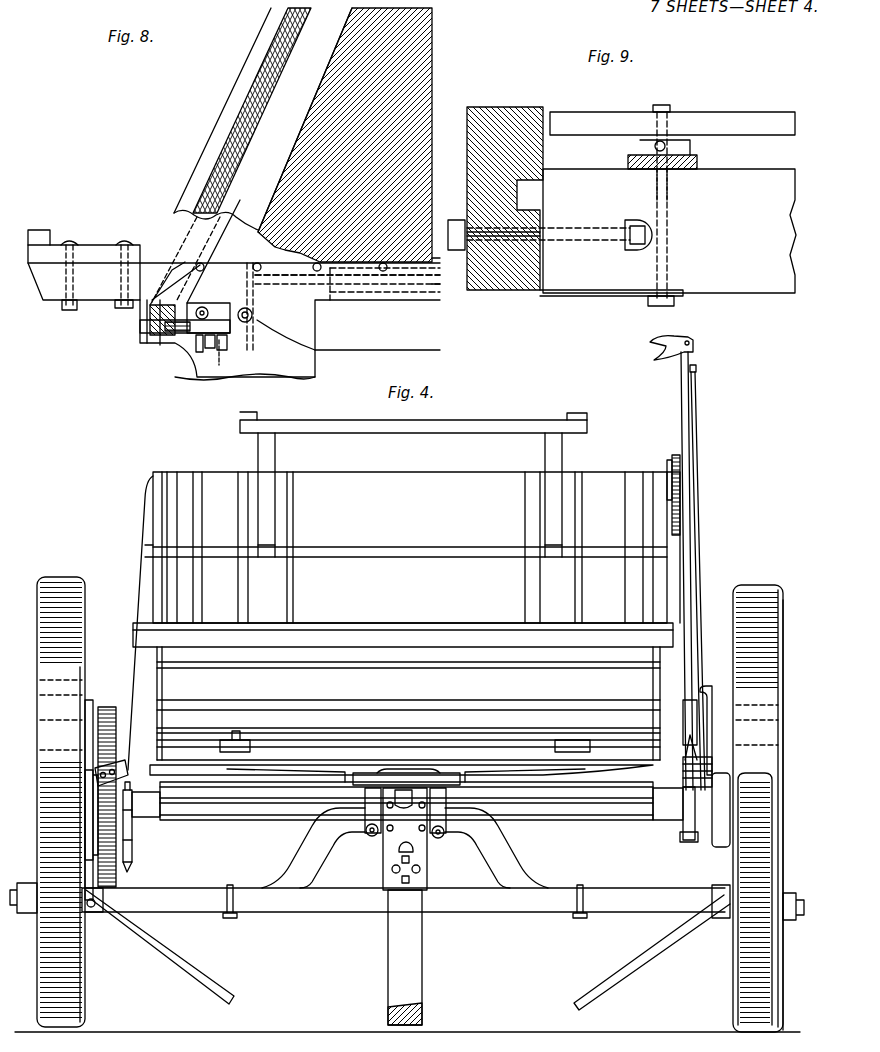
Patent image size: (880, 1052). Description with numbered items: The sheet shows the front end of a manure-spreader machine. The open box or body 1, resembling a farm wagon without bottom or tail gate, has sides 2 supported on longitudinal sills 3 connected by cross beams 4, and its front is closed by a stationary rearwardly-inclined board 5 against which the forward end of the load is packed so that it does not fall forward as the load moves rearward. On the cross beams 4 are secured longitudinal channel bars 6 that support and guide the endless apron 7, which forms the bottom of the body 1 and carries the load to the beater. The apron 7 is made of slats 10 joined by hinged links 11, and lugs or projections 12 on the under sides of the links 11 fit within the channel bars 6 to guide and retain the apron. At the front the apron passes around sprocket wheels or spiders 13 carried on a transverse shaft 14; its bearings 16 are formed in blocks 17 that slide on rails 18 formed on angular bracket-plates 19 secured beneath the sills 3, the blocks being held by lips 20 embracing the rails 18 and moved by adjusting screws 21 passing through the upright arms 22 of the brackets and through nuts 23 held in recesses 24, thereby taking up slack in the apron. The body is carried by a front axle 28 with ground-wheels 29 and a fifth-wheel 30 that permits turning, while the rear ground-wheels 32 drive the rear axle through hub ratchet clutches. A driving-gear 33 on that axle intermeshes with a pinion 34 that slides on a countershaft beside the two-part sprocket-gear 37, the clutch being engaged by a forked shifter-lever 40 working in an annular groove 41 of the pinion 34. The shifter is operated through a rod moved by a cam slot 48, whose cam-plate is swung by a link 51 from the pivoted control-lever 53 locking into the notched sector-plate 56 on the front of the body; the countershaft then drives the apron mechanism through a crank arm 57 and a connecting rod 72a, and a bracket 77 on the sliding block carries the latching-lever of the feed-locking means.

In FIG. 4, the open box or body 1 is at (410, 533).
In FIG. 8, the sides 2 is at (263, 120).
In FIG. 4, the sides 2 is at (146, 487).
In FIG. 8, the longitudinal sill 3 is at (365, 345).
In FIG. 9, the longitudinal sill 3 is at (504, 292).
In FIG. 9, the cross beam 4 is at (772, 283).
In FIG. 4, the cross beam 4 is at (200, 790).
In FIG. 8, the rearwardly-inclined board 5 is at (227, 146).
In FIG. 4, the rearwardly-inclined board 5 is at (425, 485).
In FIG. 8, the longitudinal channel bar 6 is at (353, 280).
In FIG. 9, the longitudinal channel bar 6 is at (690, 147).
In FIG. 4, the endless apron 7 is at (445, 628).
In FIG. 8, the slat 10 is at (445, 257).
In FIG. 9, the slat 10 is at (766, 118).
In FIG. 4, the slat 10 is at (375, 662).
In FIG. 8, the hinged link 11 is at (445, 289).
In FIG. 9, the hinged link 11 is at (670, 128).
In FIG. 8, the lug or projection 12 is at (370, 276).
In FIG. 9, the lug or projection 12 is at (672, 175).
In FIG. 8, the sprocket wheel or spider 13 is at (221, 244).
In FIG. 8, the forward transverse shaft 14 is at (215, 295).
In FIG. 8, the bearing 16 is at (210, 310).
In FIG. 8, the block 17 is at (207, 348).
In FIG. 8, the rail 18 is at (162, 340).
In FIG. 8, the angular bracket-plate 19 is at (225, 350).
In FIG. 8, the lip 20 is at (200, 330).
In FIG. 8, the adjusting screw 21 is at (128, 322).
In FIG. 8, the upright arm 22 is at (151, 300).
In FIG. 8, the nut 23 is at (219, 365).
In FIG. 8, the recess 24 is at (199, 352).
In FIG. 4, the front axle 28 is at (612, 905).
In FIG. 4, the ground-wheel 29 is at (776, 862).
In FIG. 4, the fifth-wheel 30 is at (435, 838).
In FIG. 4, the ground-wheel 32 is at (60, 580).
In FIG. 4, the driving-gear 33 is at (101, 705).
In FIG. 4, the pinion 34 is at (92, 768).
In FIG. 4, the sprocket-gear 37 is at (132, 872).
In FIG. 4, the forked shifter-lever 40 is at (135, 826).
In FIG. 4, the annular groove 41 is at (96, 835).
In FIG. 4, the cam slot 48 is at (714, 770).
In FIG. 4, the link 51 is at (705, 723).
In FIG. 4, the control-lever 53 is at (694, 358).
In FIG. 4, the sector-plate 56 is at (685, 499).
In FIG. 4, the crank arm 57 is at (690, 822).
In FIG. 4, the connecting rod 72a is at (715, 740).
In FIG. 4, the bracket 77 is at (698, 525).